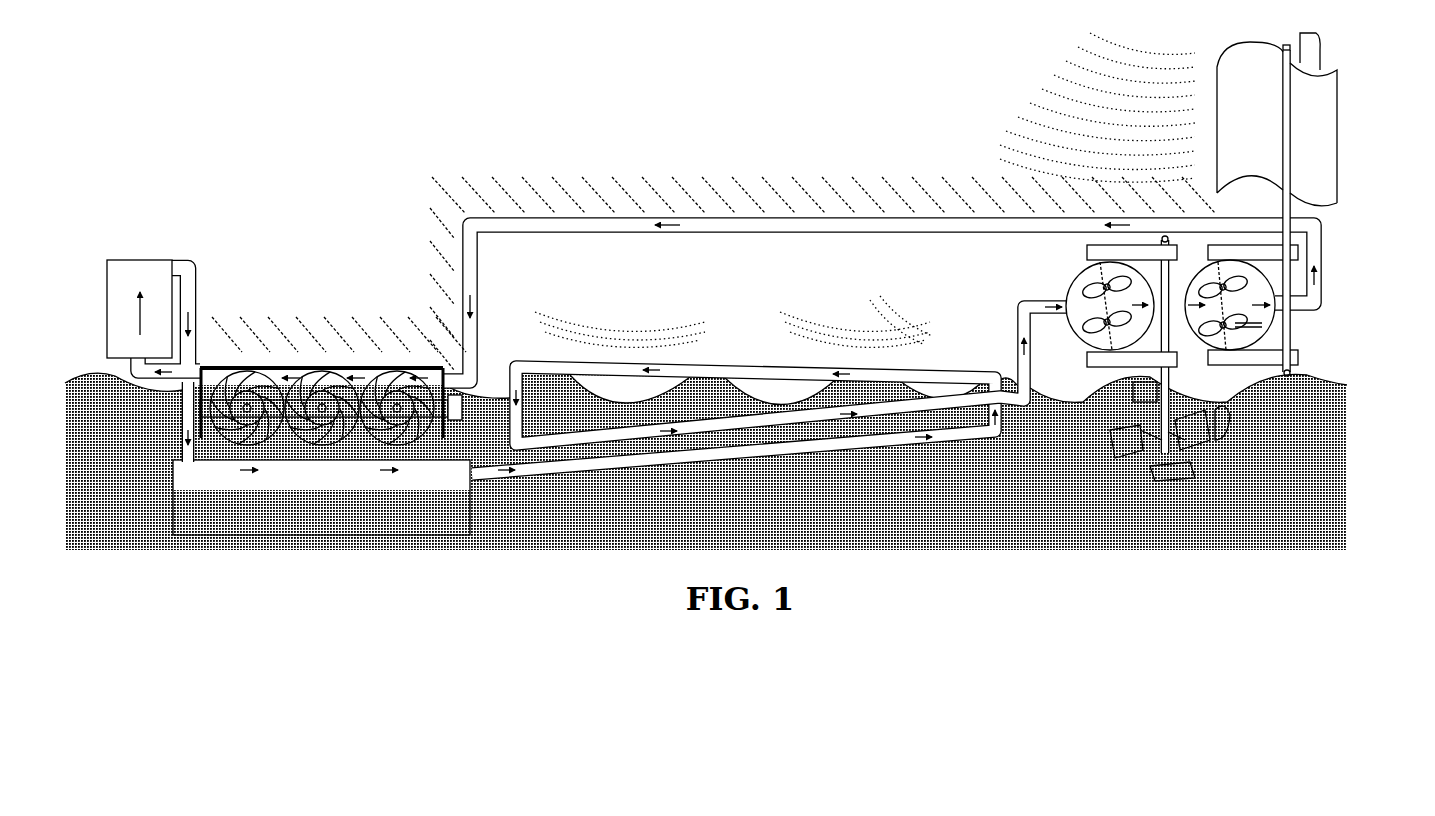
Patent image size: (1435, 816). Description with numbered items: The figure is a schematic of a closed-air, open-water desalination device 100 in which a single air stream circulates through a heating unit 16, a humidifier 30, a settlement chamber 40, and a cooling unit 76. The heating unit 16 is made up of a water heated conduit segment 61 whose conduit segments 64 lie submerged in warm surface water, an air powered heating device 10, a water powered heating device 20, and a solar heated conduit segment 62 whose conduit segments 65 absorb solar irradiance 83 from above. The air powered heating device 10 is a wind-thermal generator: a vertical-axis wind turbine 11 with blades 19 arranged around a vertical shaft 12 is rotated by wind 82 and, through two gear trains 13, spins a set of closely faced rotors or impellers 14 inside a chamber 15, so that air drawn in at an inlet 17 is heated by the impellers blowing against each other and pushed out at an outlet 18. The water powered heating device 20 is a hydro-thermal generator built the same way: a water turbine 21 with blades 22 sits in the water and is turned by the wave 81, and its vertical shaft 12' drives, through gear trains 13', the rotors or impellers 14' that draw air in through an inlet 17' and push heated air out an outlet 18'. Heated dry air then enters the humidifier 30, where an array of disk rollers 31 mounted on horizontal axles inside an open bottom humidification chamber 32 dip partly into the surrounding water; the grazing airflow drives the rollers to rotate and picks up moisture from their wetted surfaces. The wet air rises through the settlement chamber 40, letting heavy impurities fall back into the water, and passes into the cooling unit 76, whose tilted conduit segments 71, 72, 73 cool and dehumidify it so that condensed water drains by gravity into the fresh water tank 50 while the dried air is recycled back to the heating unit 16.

The desalination device 100 is at (390, 92).
The air powered heating device 10 is at (1322, 302).
The vertical-axis wind turbine 11 is at (1205, 118).
The vertical shaft 12 is at (1261, 210).
The vertical shaft 12' is at (1111, 344).
The gear trains 13 is at (1338, 284).
The gear trains 13' is at (1104, 314).
The rotors or impellers 14 is at (1239, 306).
The rotors or impellers 14' is at (1028, 332).
The chamber 15 is at (1262, 325).
The heating unit 16 is at (1145, 170).
The inlet 17 is at (1210, 328).
The inlet 17' is at (1083, 309).
The outlet 18 is at (1273, 305).
The outlet 18' is at (1120, 330).
The blades 19 is at (1312, 148).
The water powered heating device 20 is at (1067, 275).
The water turbine 21 is at (1208, 455).
The blades 22 is at (1130, 445).
The humidifier 30 is at (248, 372).
The disk rollers 31 is at (322, 372).
The open bottom humidification chamber 32 is at (440, 368).
The settlement chamber 40 is at (126, 276).
The fresh water tank 50 is at (182, 488).
The water heated conduit segment 61 is at (590, 420).
The solar heated conduit segment 62 is at (660, 233).
The conduit segments 64 is at (755, 418).
The conduit segments 65 is at (805, 233).
The conduit segment 71 is at (463, 412).
The conduit segment 72 is at (818, 428).
The conduit segment 73 is at (680, 366).
The cooling unit 76 is at (705, 463).
The water wave 81 is at (1315, 380).
The wind 82 is at (1045, 118).
The solar irradiance 83 is at (860, 183).